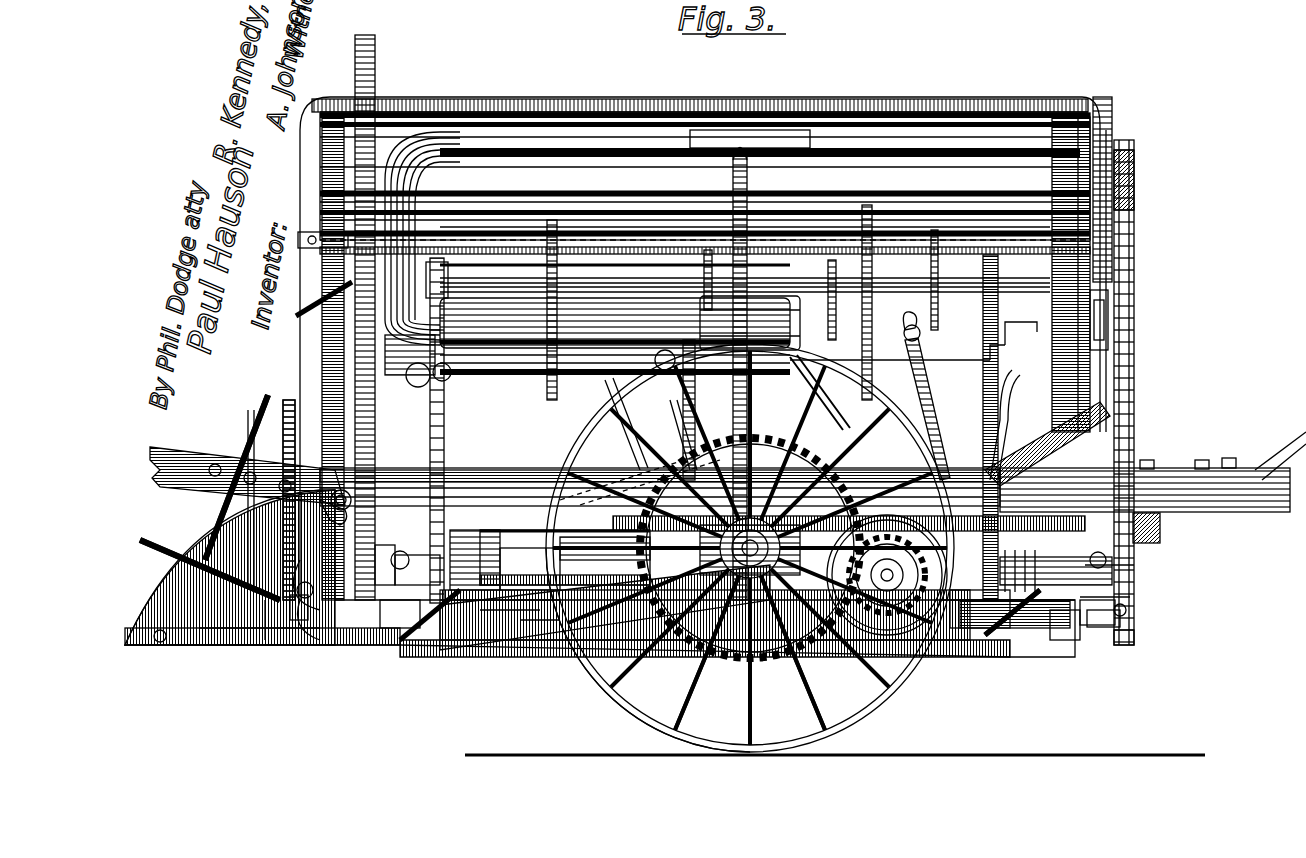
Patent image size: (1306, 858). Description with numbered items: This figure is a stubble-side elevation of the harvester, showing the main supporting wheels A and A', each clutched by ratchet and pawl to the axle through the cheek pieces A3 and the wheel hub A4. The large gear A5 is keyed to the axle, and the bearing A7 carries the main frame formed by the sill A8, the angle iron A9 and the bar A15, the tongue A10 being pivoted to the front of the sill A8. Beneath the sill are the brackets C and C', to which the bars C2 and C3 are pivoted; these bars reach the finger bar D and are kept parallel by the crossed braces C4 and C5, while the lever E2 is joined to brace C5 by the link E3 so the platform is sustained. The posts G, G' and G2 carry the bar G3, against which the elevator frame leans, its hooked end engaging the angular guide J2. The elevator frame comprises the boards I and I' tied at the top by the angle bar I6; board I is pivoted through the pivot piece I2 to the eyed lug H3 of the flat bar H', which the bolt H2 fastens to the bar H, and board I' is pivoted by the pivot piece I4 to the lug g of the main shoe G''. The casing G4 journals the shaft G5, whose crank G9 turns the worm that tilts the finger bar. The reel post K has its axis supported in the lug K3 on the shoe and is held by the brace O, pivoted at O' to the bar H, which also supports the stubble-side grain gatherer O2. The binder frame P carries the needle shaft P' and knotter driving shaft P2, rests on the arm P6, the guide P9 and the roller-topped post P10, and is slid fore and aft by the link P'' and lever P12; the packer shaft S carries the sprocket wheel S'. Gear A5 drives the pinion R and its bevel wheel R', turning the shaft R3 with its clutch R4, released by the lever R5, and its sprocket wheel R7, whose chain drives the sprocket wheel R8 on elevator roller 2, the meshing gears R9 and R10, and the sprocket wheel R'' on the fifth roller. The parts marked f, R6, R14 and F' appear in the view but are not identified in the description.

The knotter driving shaft P2 is at (712, 150).
The angle bar I6 is at (840, 92).
The binder frame P is at (437, 238).
The elevator roller 2 is at (745, 215).
The sprocket wheel S' is at (449, 428).
The bar G3 is at (628, 248).
The post G is at (975, 427).
The crank G9 is at (1012, 335).
The needle shaft P' is at (762, 323).
The angular piece J2 is at (1085, 310).
The gear R10 is at (1110, 142).
The gear R9 is at (1132, 182).
The sprocket wheel R8 is at (1135, 215).
The rod f is at (300, 266).
The shaft G5 is at (950, 364).
The lever R5 is at (1012, 384).
The lever E2 is at (1085, 412).
The lever P12 is at (935, 405).
The guide P9 is at (950, 422).
The rearmost board of the elevator frame I is at (1145, 469).
The casing G4 is at (400, 400).
The post G2 is at (420, 420).
The front board of the elevator frame I' is at (364, 317).
The post P10 is at (448, 443).
The packer shaft S is at (615, 381).
The link P'' is at (703, 424).
The arm P6 is at (652, 381).
The post G' is at (672, 410).
The reel post K is at (306, 388).
The tongue A10 is at (181, 447).
The brace O is at (236, 477).
The main supporting wheel A is at (305, 465).
The stubble side grain gatherer O2 is at (196, 536).
The pivot piece I4 is at (292, 572).
The lug g is at (296, 582).
The sill A8 is at (660, 487).
The angle iron A9 is at (602, 492).
The wheel hub A4 is at (750, 548).
The bearing A7 is at (750, 548).
The bearing R6 is at (366, 546).
The bar A15 is at (396, 546).
The bearing block R14 is at (417, 566).
The bracket C is at (475, 560).
The shaft R3 is at (535, 580).
The bracket C' is at (849, 510).
The sprocket wheel R7 is at (1135, 563).
The pivot piece I2 is at (1130, 600).
The lug H3 is at (1130, 624).
The sprocket wheel R'' is at (1149, 653).
The pivot O' is at (162, 661).
The bar H is at (578, 672).
The flat bar H' is at (654, 663).
The main shoe G'' is at (300, 641).
The lug K3 is at (299, 648).
The finger bar D is at (400, 642).
The bar C2 is at (411, 665).
The brace F' is at (723, 651).
The cross brace C5 is at (472, 660).
The link E3 is at (503, 660).
The cross brace C4 is at (540, 656).
The main supporting wheel A' is at (648, 650).
The large gear A5 is at (690, 660).
The cheek pieces A3 is at (840, 665).
The pinion R is at (887, 612).
The bevel wheel R' is at (887, 606).
The clutch R4 is at (1030, 640).
The bar C3 is at (990, 660).
The bolt H2 is at (1070, 642).